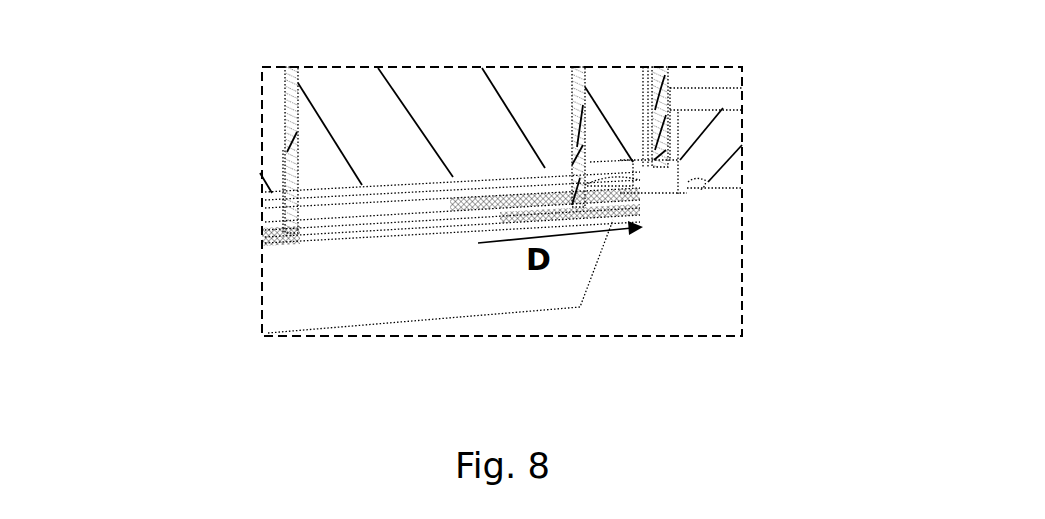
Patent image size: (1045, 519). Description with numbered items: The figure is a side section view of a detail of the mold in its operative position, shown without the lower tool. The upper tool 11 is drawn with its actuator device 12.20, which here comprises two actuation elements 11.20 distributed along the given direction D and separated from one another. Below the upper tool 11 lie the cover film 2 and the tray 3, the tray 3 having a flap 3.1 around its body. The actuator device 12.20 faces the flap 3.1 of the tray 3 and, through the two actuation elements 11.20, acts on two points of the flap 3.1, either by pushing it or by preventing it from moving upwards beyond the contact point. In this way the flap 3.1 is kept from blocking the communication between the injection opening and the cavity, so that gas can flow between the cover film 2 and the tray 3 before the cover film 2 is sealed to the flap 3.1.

The upper tool 11 is at (348, 105).
The actuation element 11.20 is at (290, 173).
The actuator device 12.20 is at (575, 130).
The flap 3.1 is at (348, 237).
The cover film 2 is at (428, 210).
The tray 3 is at (608, 290).